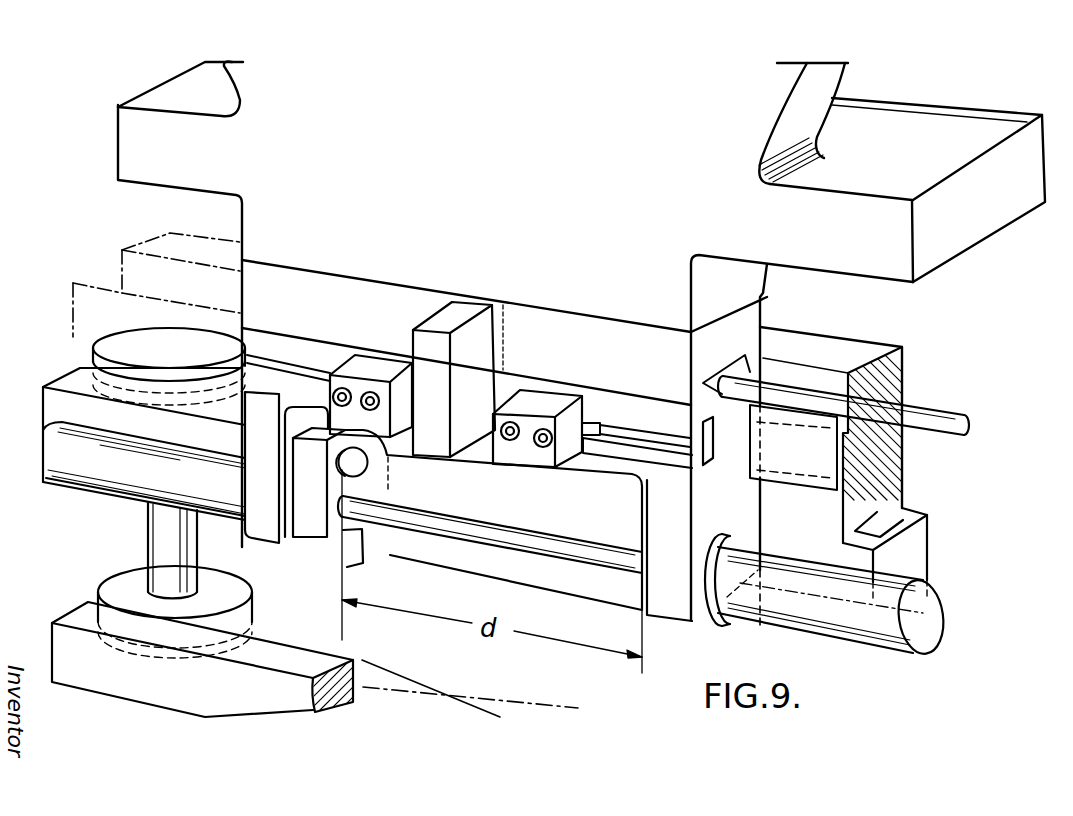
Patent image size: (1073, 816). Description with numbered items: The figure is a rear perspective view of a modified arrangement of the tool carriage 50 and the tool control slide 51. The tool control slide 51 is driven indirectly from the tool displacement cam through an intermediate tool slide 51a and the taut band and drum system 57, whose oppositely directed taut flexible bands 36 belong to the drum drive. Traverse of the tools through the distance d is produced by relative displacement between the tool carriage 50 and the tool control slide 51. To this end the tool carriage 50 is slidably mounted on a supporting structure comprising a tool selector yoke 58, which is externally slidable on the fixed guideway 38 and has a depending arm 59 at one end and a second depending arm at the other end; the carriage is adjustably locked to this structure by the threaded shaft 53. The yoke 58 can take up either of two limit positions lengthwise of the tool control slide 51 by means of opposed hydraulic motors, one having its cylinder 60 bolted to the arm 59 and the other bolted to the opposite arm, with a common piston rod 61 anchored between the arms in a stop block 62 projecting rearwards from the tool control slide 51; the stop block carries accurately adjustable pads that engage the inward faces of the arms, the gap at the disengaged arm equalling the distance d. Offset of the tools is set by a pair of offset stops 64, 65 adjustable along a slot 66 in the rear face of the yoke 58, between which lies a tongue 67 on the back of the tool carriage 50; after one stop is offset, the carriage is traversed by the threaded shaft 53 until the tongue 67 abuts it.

The tool carriage 50 is at (482, 170).
The fixed guideway 38 is at (120, 257).
The threaded shaft 53 is at (928, 407).
The taut band and drum system 57 is at (136, 338).
The hydraulic motor cylinder 60 is at (83, 470).
The tool selector yoke 58 is at (265, 338).
The depending arm 59 is at (263, 530).
The stop block 62 is at (313, 527).
The common piston rod 61 is at (500, 532).
The offset stop 64 is at (363, 363).
The tongue 67 is at (430, 312).
The offset stop 65 is at (543, 396).
The slot 66 is at (645, 440).
The tool control slide 51 is at (915, 539).
The taut flexible bands 36 is at (249, 622).
The intermediate tool slide 51a is at (327, 657).